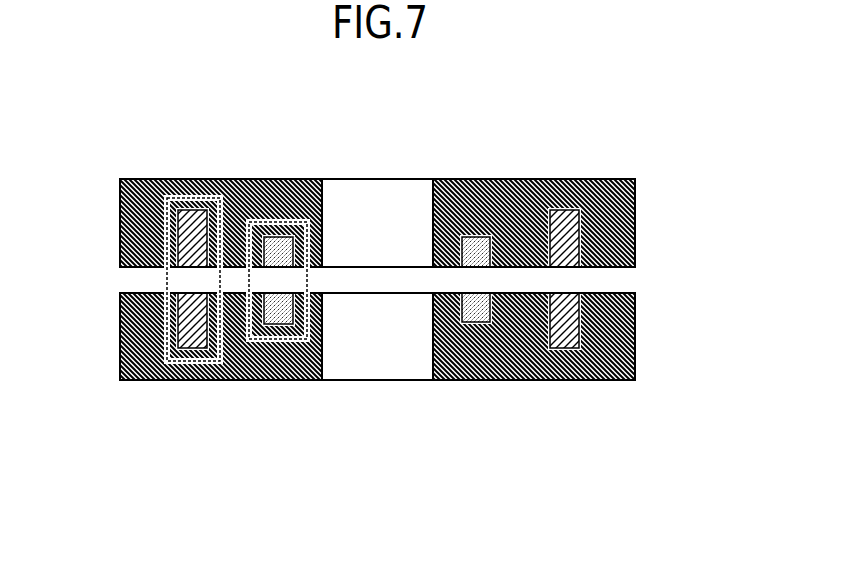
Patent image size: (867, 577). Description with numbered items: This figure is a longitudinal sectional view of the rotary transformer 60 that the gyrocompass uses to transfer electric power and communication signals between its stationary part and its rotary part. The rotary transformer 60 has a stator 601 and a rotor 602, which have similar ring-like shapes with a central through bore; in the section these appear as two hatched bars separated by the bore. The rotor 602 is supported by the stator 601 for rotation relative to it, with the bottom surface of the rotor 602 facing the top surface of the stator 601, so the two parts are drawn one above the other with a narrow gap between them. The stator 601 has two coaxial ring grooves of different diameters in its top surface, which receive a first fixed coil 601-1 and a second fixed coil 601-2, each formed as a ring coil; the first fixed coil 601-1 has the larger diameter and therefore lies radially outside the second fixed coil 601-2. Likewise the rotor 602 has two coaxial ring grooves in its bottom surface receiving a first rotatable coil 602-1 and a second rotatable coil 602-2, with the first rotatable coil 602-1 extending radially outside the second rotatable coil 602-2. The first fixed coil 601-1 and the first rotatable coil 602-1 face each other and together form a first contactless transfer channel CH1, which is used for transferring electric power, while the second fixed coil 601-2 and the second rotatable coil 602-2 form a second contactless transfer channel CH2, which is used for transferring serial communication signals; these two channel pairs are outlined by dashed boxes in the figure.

The rotary transformer 60 is at (114, 426).
The stator 601 is at (636, 338).
The rotor 602 is at (636, 223).
The first fixed coil 601-1 is at (568, 348).
The second fixed coil 601-2 is at (478, 322).
The first rotatable coil 602-1 is at (567, 210).
The second rotatable coil 602-2 is at (476, 237).
The first contactless transfer channel CH1 is at (193, 362).
The second contactless transfer channel CH2 is at (280, 340).